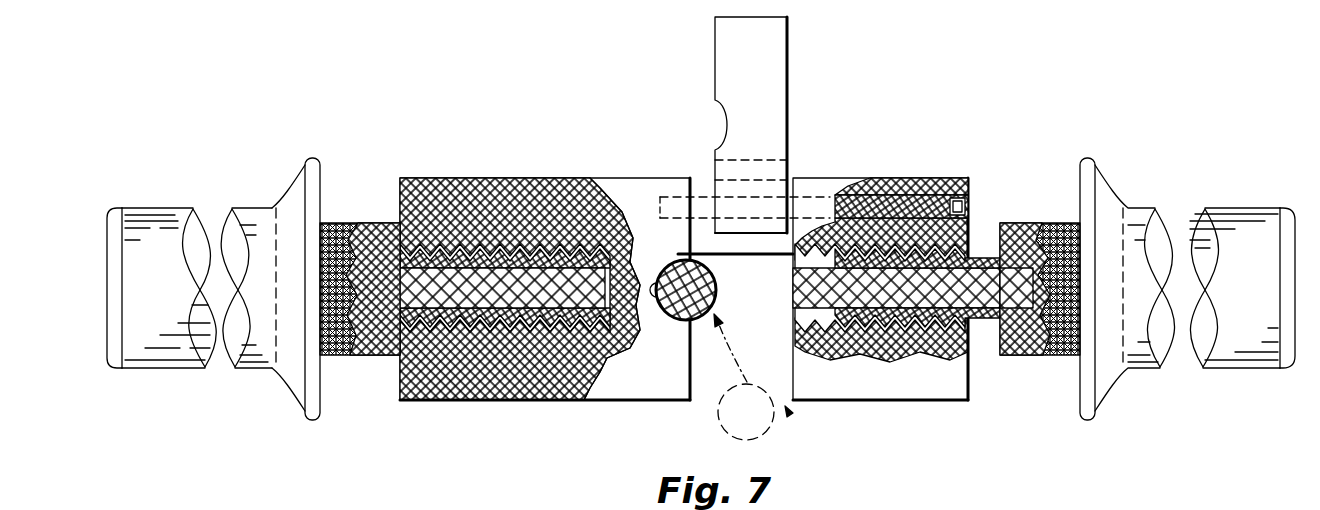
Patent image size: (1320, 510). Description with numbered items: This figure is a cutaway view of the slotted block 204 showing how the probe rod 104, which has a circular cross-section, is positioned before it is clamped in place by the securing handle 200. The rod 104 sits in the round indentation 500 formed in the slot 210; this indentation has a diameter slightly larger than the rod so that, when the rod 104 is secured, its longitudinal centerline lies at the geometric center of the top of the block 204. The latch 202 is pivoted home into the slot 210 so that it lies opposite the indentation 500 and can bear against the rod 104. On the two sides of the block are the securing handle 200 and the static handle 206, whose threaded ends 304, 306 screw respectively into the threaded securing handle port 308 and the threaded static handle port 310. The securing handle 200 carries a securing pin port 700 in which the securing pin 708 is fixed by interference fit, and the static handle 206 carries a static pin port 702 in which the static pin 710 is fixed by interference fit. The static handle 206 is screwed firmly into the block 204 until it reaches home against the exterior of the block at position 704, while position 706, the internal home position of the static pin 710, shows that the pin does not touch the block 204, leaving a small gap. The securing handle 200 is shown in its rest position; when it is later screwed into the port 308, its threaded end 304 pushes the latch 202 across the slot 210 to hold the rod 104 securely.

The rod 104 is at (762, 437).
The securing handle 200 is at (1257, 368).
The latch 202 is at (715, 50).
The slotted block 204 is at (505, 401).
The static handle 206 is at (157, 368).
The slot 210 is at (786, 408).
The threaded end of securing handle 304 is at (898, 246).
The threaded end of static handle 306 is at (487, 244).
The securing handle port 308 is at (962, 400).
The static handle port 310 is at (430, 332).
The round indentation 500 is at (678, 322).
The securing pin port 700 is at (906, 216).
The static pin port 702 is at (458, 332).
The home position of static handle 704 is at (393, 219).
The internal home position of static pin 706 is at (587, 244).
The securing pin 708 is at (937, 312).
The static pin 710 is at (586, 312).